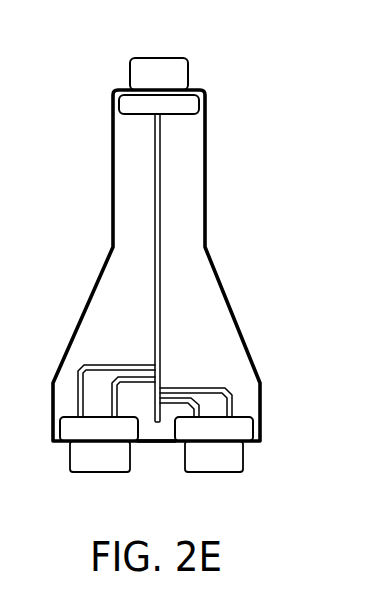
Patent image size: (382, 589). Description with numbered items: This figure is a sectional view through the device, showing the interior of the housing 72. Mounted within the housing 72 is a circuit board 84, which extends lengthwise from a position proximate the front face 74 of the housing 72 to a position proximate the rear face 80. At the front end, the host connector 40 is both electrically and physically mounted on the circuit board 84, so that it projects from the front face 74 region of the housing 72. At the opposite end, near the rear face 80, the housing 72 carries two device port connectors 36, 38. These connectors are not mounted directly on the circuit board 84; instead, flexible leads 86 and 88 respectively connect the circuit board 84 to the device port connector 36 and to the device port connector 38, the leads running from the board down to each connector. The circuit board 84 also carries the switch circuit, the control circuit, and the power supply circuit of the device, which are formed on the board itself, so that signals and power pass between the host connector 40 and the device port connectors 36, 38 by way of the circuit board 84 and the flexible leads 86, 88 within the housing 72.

The device port connector 36 is at (98, 474).
The device port connector 38 is at (222, 473).
The host connector 40 is at (188, 72).
The housing 72 is at (205, 230).
The front face 74 is at (116, 90).
The rear face 80 is at (150, 443).
The circuit board 84 is at (161, 161).
The flexible lead 86 is at (93, 363).
The flexible lead 88 is at (218, 387).